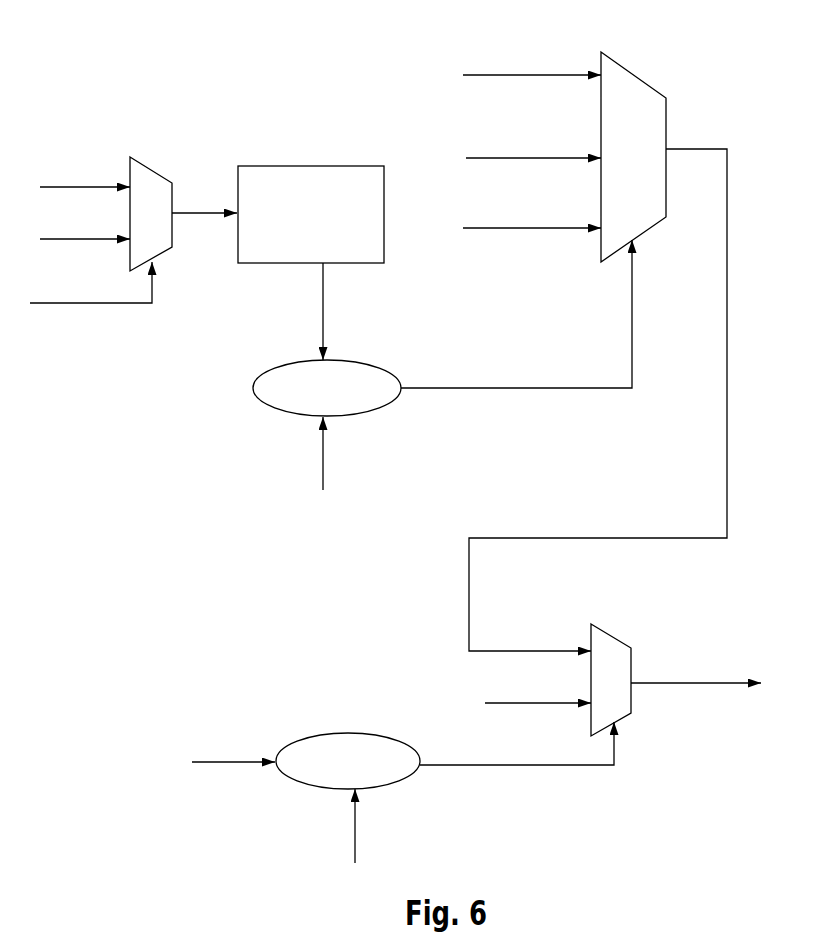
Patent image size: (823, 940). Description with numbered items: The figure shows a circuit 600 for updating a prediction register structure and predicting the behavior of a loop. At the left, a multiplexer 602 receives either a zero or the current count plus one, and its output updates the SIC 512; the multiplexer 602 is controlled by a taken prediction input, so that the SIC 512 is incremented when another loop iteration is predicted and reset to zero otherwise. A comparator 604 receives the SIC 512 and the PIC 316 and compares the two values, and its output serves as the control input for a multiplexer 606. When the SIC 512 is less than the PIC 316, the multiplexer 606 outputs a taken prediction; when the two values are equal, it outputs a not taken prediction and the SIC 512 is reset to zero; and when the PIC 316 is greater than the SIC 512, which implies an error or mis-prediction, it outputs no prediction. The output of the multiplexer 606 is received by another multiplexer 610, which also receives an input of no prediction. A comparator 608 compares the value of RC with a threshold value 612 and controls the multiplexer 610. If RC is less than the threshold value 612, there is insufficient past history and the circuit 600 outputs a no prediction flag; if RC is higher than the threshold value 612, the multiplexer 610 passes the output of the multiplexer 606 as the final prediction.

The circuit 600 is at (145, 96).
The multiplexer 602 is at (157, 172).
The SIC 512 is at (350, 226).
The comparator 604 is at (368, 367).
The PIC 316 is at (323, 469).
The multiplexer 606 is at (645, 82).
The comparator 608 is at (323, 733).
The multiplexer 610 is at (615, 643).
The threshold value 612 is at (455, 826).